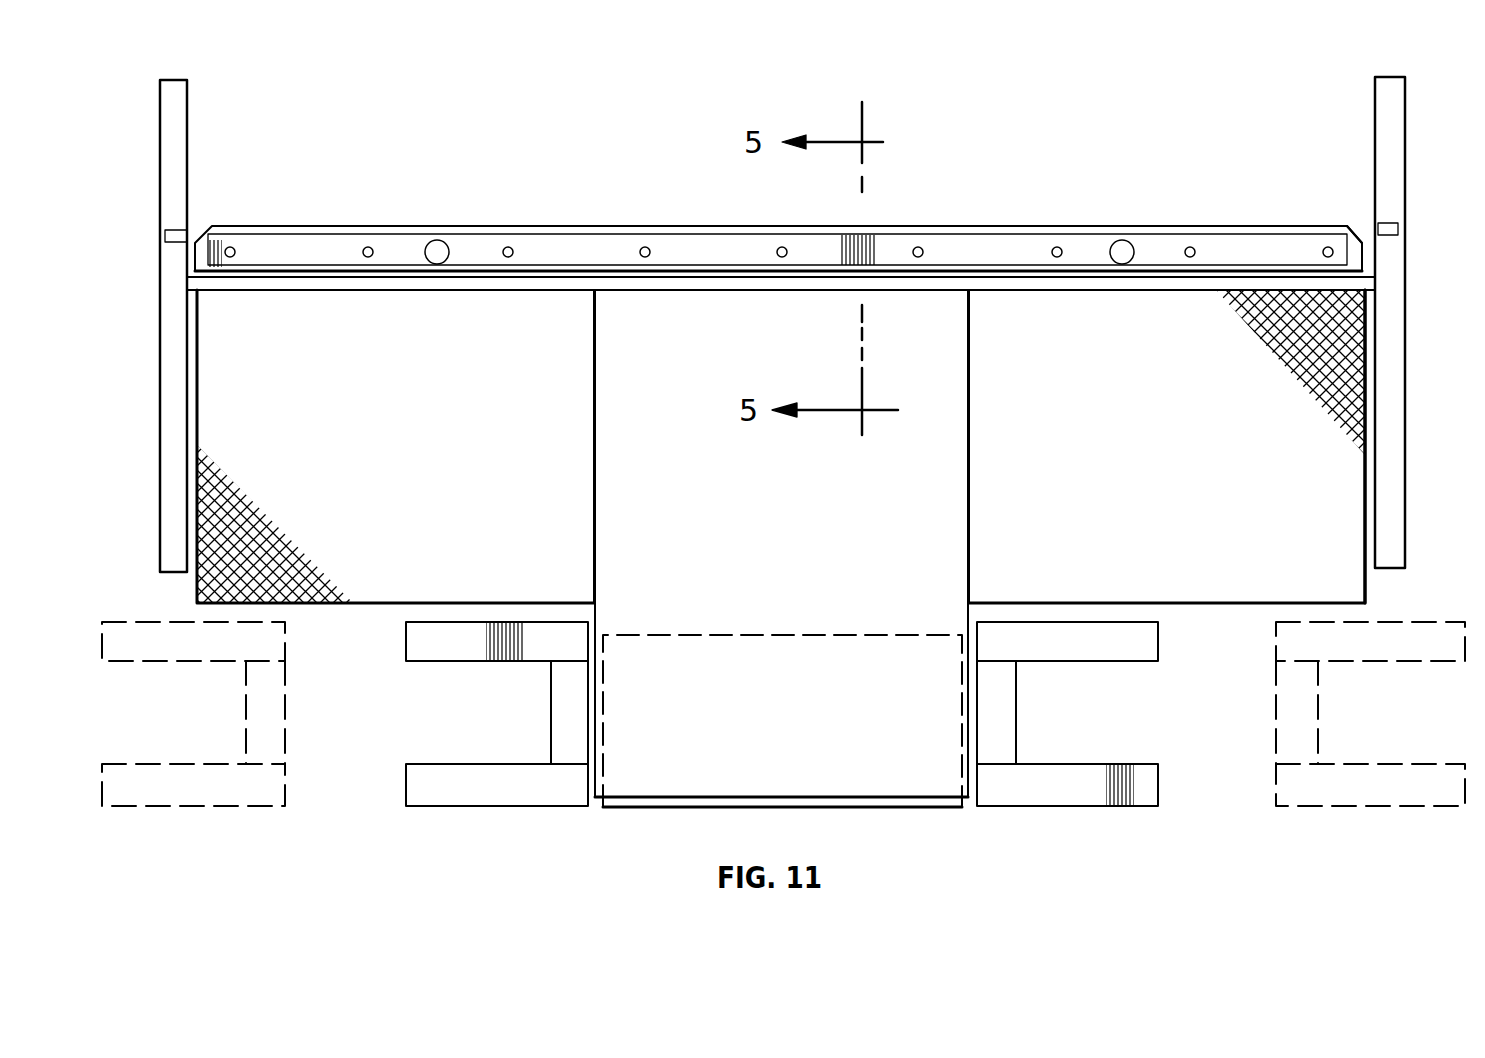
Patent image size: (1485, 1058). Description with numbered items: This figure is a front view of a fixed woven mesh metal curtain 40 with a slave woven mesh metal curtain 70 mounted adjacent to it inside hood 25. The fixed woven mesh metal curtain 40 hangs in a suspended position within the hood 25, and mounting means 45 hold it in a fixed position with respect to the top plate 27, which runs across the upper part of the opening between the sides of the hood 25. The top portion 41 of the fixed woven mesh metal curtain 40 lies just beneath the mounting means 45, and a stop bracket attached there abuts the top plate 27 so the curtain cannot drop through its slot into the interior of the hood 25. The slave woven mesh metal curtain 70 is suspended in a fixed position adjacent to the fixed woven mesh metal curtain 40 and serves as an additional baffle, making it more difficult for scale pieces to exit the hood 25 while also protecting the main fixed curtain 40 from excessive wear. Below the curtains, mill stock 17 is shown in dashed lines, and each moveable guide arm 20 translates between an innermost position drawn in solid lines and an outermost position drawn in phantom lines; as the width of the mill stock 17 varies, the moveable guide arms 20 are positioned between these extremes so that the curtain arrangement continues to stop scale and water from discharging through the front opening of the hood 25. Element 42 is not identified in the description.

The mill stock 17 is at (788, 728).
The moveable guide arm 20 is at (178, 778).
The hood 25 is at (177, 410).
The top plate 27 is at (466, 292).
The fixed woven mesh metal curtain 40 is at (395, 466).
The top portion 41 is at (1362, 252).
The panel edge 42 is at (1325, 587).
The mounting means 45 is at (1213, 211).
The slave woven mesh metal curtain 70 is at (775, 531).